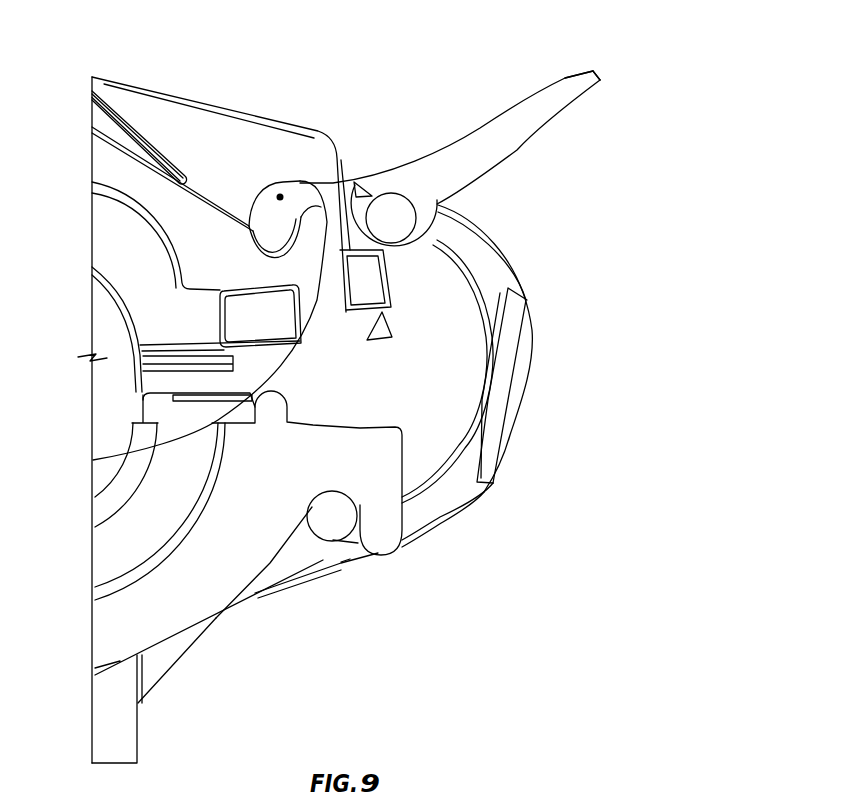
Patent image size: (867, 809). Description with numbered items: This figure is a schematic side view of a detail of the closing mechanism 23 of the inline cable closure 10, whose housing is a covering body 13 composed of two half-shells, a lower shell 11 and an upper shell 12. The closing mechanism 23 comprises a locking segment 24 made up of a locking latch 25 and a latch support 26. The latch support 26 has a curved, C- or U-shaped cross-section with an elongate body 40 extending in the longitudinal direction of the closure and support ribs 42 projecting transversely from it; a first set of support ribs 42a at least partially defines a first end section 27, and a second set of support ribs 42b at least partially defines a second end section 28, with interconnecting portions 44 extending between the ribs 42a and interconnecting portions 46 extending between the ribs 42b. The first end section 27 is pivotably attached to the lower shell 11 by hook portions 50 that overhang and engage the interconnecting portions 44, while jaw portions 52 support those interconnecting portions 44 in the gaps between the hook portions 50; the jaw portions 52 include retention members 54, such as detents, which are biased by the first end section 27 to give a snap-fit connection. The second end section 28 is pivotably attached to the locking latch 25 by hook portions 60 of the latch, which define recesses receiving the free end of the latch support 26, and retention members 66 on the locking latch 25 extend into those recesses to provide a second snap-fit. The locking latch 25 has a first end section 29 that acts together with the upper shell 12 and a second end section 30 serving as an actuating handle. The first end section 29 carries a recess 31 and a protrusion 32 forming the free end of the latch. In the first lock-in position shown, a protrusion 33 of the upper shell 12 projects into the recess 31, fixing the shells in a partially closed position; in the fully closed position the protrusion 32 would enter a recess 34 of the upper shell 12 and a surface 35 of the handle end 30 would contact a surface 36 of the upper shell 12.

The cable closure 10 is at (456, 720).
The lower shell 11 is at (170, 609).
The upper shell 12 is at (113, 171).
The covering body 13 is at (226, 385).
The closing mechanism 23 is at (646, 158).
The locking segment 24 is at (568, 315).
The locking latch 25 is at (457, 134).
The latch support 26 is at (517, 420).
The first end section 27 is at (331, 519).
The second end section 28 is at (393, 215).
The first end section 29 is at (292, 174).
The second end section 30 is at (546, 75).
The recess 31 is at (326, 220).
The protrusion 32 is at (272, 241).
The protrusion 33 is at (150, 460).
The recess 34 is at (270, 243).
The surface 35 is at (495, 121).
The surface 36 is at (184, 137).
The elongate body 40 is at (484, 378).
The support ribs 42 is at (489, 379).
The first set of support ribs 42a is at (442, 521).
The second set of support ribs 42b is at (468, 236).
The interconnecting portions 44 is at (287, 578).
The interconnecting portions 46 is at (385, 157).
The hook portions 50 is at (380, 448).
The jaw portions 52 is at (291, 575).
The retention members 54 is at (346, 567).
The hook portions 60 is at (399, 258).
The retention members 66 is at (366, 195).